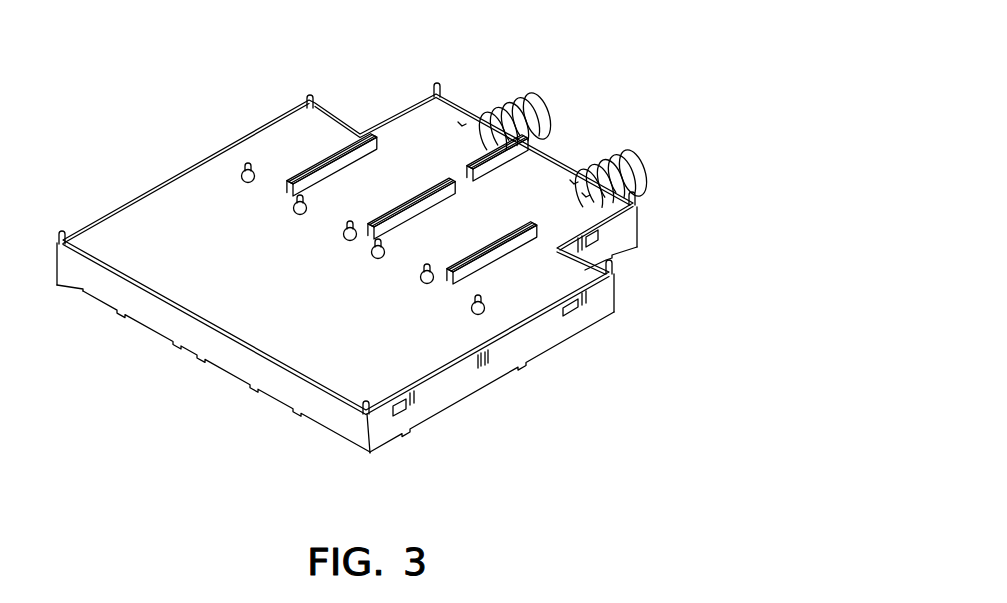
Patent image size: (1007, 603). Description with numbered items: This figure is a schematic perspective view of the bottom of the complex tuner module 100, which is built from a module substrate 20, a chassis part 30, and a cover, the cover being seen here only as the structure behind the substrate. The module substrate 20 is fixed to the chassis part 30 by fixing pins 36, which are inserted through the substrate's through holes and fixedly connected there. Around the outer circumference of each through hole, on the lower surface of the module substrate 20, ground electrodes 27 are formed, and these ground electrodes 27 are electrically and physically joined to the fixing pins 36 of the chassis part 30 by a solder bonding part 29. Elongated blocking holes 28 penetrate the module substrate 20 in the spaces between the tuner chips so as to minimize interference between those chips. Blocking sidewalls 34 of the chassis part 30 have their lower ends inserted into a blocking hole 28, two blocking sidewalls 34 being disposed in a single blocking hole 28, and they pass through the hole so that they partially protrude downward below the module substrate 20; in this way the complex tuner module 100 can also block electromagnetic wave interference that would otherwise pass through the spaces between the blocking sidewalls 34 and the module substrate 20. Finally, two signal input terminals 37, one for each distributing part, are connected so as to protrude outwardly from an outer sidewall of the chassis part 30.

The complex tuner module 100 is at (580, 67).
The module substrate 20 is at (252, 327).
The ground electrodes 27 is at (240, 170).
The blocking holes 28 is at (503, 250).
The solder bonding part 29 is at (484, 310).
The chassis part 30 is at (120, 315).
The blocking sidewalls 34 is at (498, 263).
The fixing pins 36 is at (243, 170).
The signal input terminals 37 is at (540, 99).